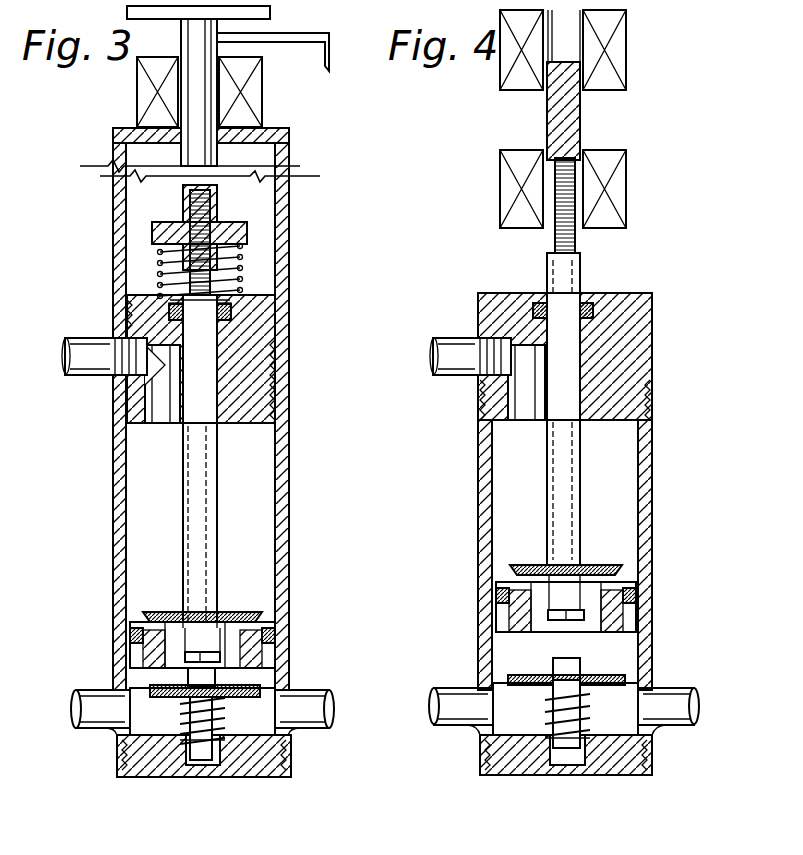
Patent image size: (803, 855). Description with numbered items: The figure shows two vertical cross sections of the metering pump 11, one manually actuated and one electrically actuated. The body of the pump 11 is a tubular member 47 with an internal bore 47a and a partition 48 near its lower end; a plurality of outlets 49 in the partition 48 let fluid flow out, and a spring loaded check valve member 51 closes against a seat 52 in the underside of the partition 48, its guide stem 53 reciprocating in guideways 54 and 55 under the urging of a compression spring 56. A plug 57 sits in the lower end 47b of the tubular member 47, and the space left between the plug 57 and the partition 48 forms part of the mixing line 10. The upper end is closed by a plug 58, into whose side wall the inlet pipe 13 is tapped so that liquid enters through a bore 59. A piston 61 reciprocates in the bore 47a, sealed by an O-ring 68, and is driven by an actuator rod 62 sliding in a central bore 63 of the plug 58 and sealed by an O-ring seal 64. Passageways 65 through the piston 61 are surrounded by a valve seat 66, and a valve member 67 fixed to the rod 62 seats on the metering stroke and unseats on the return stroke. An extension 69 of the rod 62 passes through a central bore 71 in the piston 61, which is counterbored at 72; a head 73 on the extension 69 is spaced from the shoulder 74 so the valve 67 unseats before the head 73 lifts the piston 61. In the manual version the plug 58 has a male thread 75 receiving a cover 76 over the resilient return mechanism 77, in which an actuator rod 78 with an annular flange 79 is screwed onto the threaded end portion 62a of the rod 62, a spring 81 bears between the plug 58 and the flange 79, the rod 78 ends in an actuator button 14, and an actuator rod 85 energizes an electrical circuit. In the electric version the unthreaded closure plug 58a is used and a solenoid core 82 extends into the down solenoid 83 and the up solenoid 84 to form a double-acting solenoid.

In FIG. 3, the mixing line 10 is at (318, 709).
In FIG. 4, the mixing line 10 is at (697, 708).
In FIG. 3, the pump 11 is at (298, 493).
In FIG. 4, the pump 11 is at (661, 467).
In FIG. 3, the inlet pipe 13 is at (80, 340).
In FIG. 4, the inlet pipe 13 is at (450, 338).
In FIG. 3, the actuator button 14 is at (278, 17).
In FIG. 3, the tubular member 47 is at (289, 466).
In FIG. 4, the tubular member 47 is at (652, 442).
In FIG. 3, the internal bore 47a is at (280, 500).
In FIG. 4, the internal bore 47a is at (640, 480).
In FIG. 3, the lower end 47b is at (114, 735).
In FIG. 4, the lower end 47b is at (480, 740).
In FIG. 3, the partition 48 is at (260, 690).
In FIG. 4, the partition 48 is at (626, 680).
In FIG. 3, the outlets 49 is at (216, 676).
In FIG. 4, the outlets 49 is at (586, 670).
In FIG. 3, the check valve member 51 is at (202, 711).
In FIG. 4, the check valve member 51 is at (565, 709).
In FIG. 3, the seat 52 is at (262, 695).
In FIG. 4, the seat 52 is at (566, 702).
In FIG. 3, the guide stem 53 is at (210, 770).
In FIG. 4, the guide stem 53 is at (590, 768).
In FIG. 3, the guideway 54 is at (196, 760).
In FIG. 4, the guideway 54 is at (568, 760).
In FIG. 3, the guideway 55 is at (182, 700).
In FIG. 4, the guideway 55 is at (560, 690).
In FIG. 3, the compression spring 56 is at (178, 742).
In FIG. 4, the compression spring 56 is at (545, 742).
In FIG. 3, the plug 57 is at (280, 756).
In FIG. 4, the plug 57 is at (655, 756).
In FIG. 3, the plug 58 is at (270, 362).
In FIG. 4, the closure plug 58a is at (656, 338).
In FIG. 3, the bore 59 is at (170, 420).
In FIG. 4, the bore 59 is at (526, 420).
In FIG. 3, the piston 61 is at (195, 612).
In FIG. 4, the piston 61 is at (579, 585).
In FIG. 3, the actuator rod 62 is at (220, 452).
In FIG. 4, the actuator rod 62 is at (582, 266).
In FIG. 3, the threaded end portion 62a is at (183, 304).
In FIG. 3, the central bore 63 is at (218, 352).
In FIG. 3, the O-ring seal 64 is at (232, 310).
In FIG. 4, the O-ring seal 64 is at (594, 312).
In FIG. 3, the passageways 65 is at (160, 642).
In FIG. 4, the passageways 65 is at (622, 622).
In FIG. 3, the valve seat 66 is at (150, 615).
In FIG. 4, the valve seat 66 is at (500, 570).
In FIG. 3, the valve member 67 is at (145, 612).
In FIG. 4, the valve member 67 is at (510, 565).
In FIG. 3, the O-ring 68 is at (276, 632).
In FIG. 4, the O-ring 68 is at (636, 596).
In FIG. 3, the extension 69 is at (218, 602).
In FIG. 4, the extension 69 is at (581, 562).
In FIG. 3, the central bore 71 is at (208, 616).
In FIG. 4, the central bore 71 is at (590, 566).
In FIG. 3, the counterbore 72 is at (185, 656).
In FIG. 4, the counterbore 72 is at (600, 625).
In FIG. 3, the head 73 is at (180, 662).
In FIG. 4, the head 73 is at (570, 630).
In FIG. 3, the shoulder 74 is at (186, 630).
In FIG. 4, the shoulder 74 is at (550, 585).
In FIG. 3, the male thread 75 is at (232, 318).
In FIG. 3, the cover 76 is at (282, 238).
In FIG. 3, the resilient return mechanism 77 is at (221, 241).
In FIG. 3, the actuator rod 78 is at (215, 190).
In FIG. 3, the annular flange 79 is at (247, 233).
In FIG. 3, the spring 81 is at (245, 258).
In FIG. 4, the solenoid core 82 is at (578, 211).
In FIG. 3, the solenoid 83 is at (262, 96).
In FIG. 4, the solenoid 83 is at (610, 150).
In FIG. 4, the solenoid 84 is at (628, 45).
In FIG. 3, the actuator rod 85 is at (322, 33).